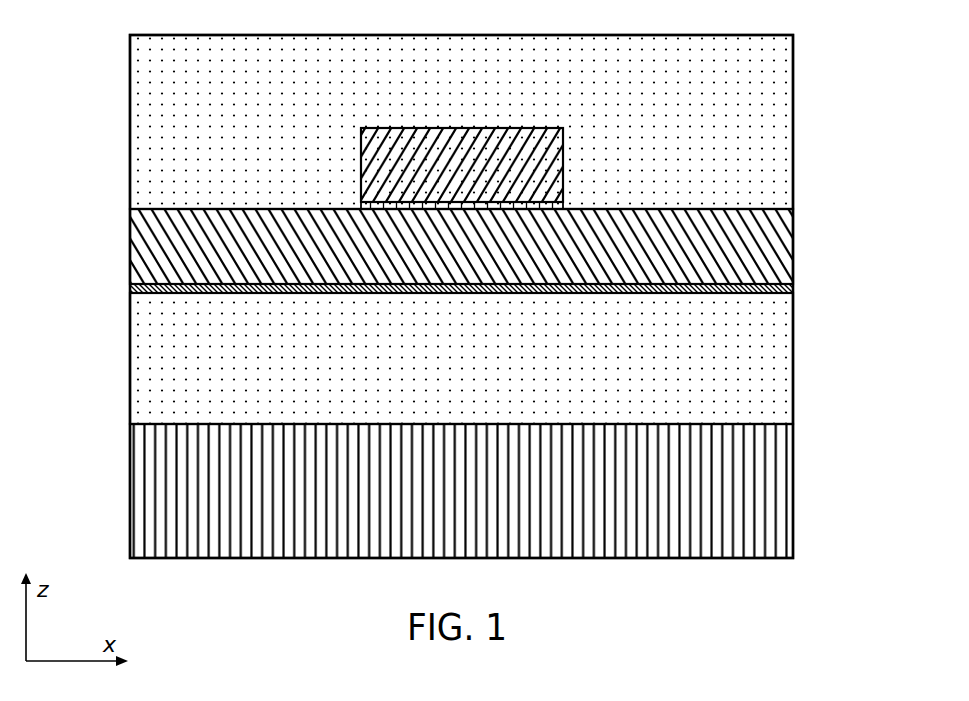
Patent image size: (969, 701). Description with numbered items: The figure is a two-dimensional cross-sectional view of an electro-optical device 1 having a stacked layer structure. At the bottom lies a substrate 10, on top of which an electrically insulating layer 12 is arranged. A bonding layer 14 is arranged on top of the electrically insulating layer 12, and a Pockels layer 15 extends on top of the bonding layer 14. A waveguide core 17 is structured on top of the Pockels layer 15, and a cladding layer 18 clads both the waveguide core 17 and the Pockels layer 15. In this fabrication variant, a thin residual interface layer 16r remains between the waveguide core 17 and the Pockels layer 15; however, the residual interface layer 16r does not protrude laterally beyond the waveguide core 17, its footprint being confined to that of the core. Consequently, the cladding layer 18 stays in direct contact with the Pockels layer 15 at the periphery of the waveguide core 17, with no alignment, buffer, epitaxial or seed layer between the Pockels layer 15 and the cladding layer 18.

The electro-optical device 1 is at (762, 587).
The substrate 10 is at (135, 462).
The electrically insulating layer 12 is at (137, 352).
The bonding layer 14 is at (790, 290).
The Pockels layer 15 is at (130, 243).
The residual interface layer 16r is at (565, 203).
The waveguide core 17 is at (553, 147).
The cladding layer 18 is at (782, 72).